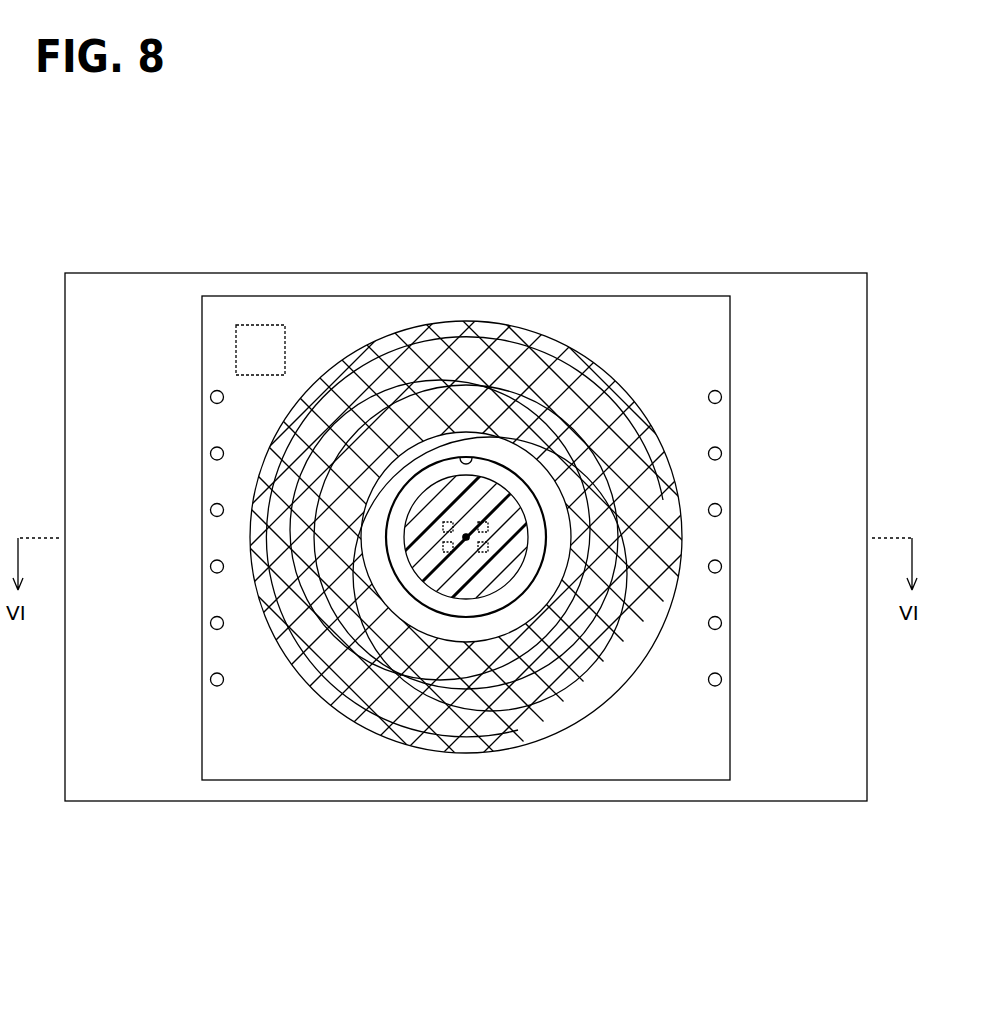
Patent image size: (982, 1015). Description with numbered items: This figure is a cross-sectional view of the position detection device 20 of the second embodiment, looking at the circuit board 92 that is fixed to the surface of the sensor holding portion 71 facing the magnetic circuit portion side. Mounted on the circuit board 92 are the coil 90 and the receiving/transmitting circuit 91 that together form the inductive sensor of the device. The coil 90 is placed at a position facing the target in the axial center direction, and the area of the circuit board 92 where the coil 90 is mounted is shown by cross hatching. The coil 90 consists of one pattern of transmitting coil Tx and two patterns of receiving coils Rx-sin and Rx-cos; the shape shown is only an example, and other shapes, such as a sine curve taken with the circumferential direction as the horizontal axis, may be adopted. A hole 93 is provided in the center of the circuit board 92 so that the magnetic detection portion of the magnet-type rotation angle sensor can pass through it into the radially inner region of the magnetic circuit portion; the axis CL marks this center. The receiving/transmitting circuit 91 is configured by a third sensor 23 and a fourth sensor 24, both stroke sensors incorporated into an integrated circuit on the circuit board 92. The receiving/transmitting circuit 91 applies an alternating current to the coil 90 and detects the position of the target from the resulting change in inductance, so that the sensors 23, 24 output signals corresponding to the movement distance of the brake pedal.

The position detection device 20 is at (741, 156).
The sensor holding portion 71 is at (141, 315).
The coil 90 is at (343, 387).
The receiving/transmitting circuit 91 is at (301, 259).
The third sensor 23 is at (301, 259).
The fourth sensor 24 is at (262, 345).
The circuit board 92 is at (415, 307).
The hole 93 is at (486, 452).
The transmitting coil Tx is at (537, 333).
The receiving coil Rx-sin is at (618, 535).
The receiving coil Rx-cos is at (653, 660).
The center line CL is at (467, 541).